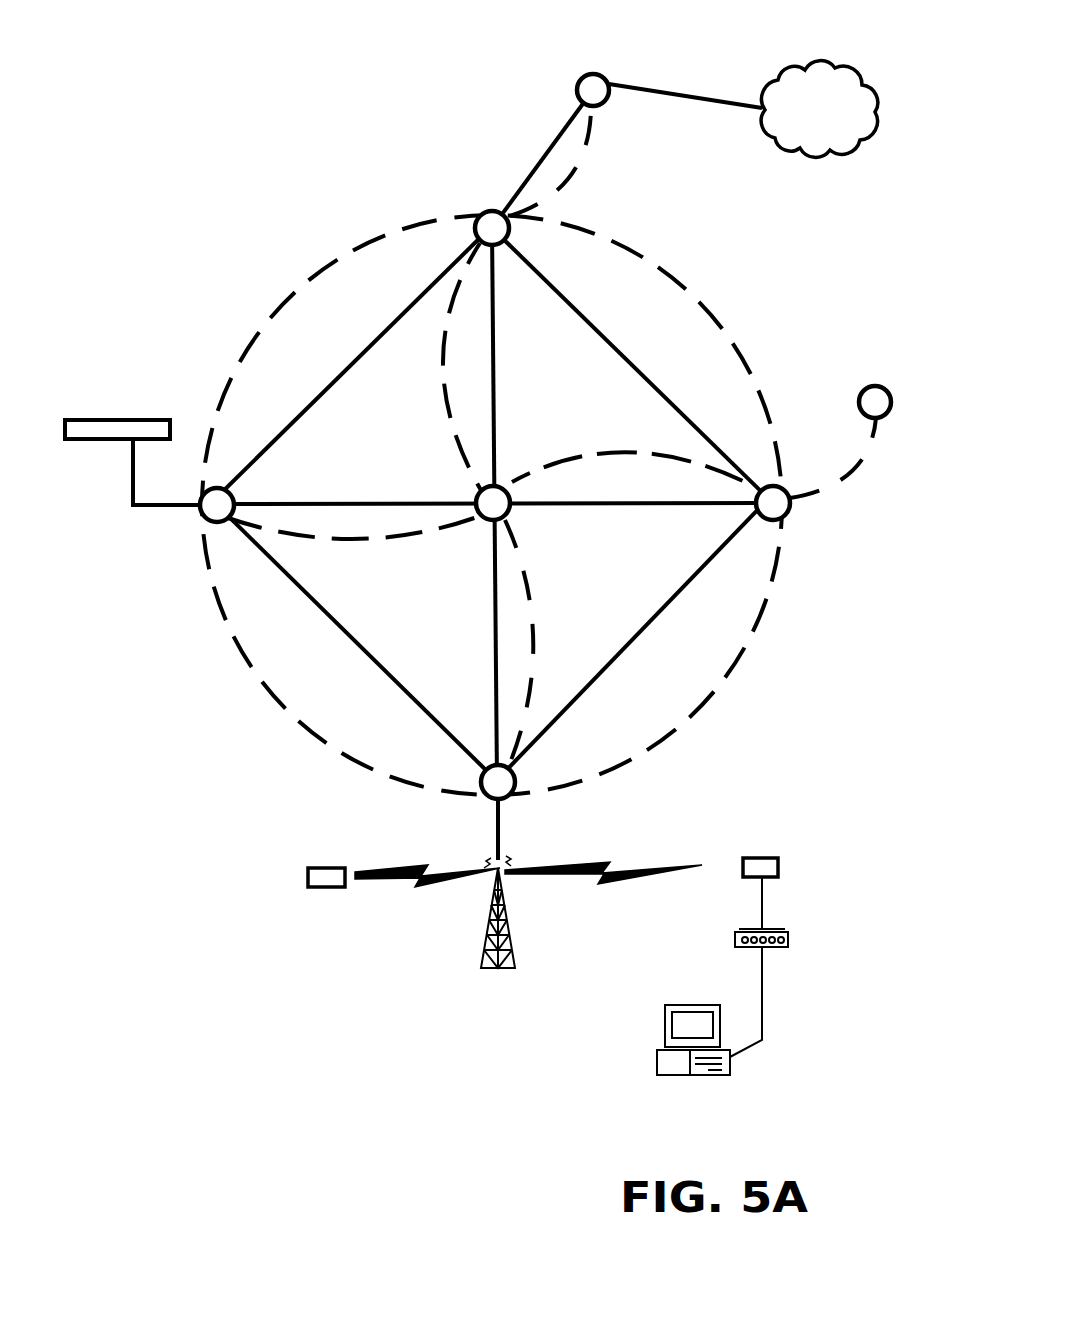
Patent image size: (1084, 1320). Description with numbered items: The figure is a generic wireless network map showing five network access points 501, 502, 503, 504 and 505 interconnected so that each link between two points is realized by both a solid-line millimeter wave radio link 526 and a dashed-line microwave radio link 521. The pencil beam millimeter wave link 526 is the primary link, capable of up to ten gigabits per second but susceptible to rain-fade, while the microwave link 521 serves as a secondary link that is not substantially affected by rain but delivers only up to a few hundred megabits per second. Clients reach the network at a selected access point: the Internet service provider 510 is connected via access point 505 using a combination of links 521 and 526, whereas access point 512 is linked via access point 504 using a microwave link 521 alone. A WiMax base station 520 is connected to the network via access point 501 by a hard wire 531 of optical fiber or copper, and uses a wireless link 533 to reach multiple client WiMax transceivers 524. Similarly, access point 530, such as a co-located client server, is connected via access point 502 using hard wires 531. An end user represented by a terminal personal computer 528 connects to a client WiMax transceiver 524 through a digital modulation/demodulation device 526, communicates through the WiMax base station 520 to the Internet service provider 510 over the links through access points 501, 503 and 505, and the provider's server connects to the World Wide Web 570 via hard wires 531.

The network access point 501 is at (475, 799).
The network access point 502 is at (205, 522).
The network access point 503 is at (524, 513).
The network access point 504 is at (806, 513).
The network access point 505 is at (478, 210).
The network access point (Internet service provider) 510 is at (567, 76).
The network access point 512 is at (887, 375).
The WiMax base station 520 is at (503, 958).
The microwave radio link 521 is at (560, 451).
The client WiMax transceiver 524 is at (507, 884).
The millimeter wave radio link 526 is at (490, 657).
The terminal personal computer 528 is at (693, 1059).
The network access point (client server) 530 is at (117, 405).
The hard wire 531 is at (500, 837).
The wireless link 533 is at (528, 878).
The World Wide Web (Internet) 570 is at (819, 109).